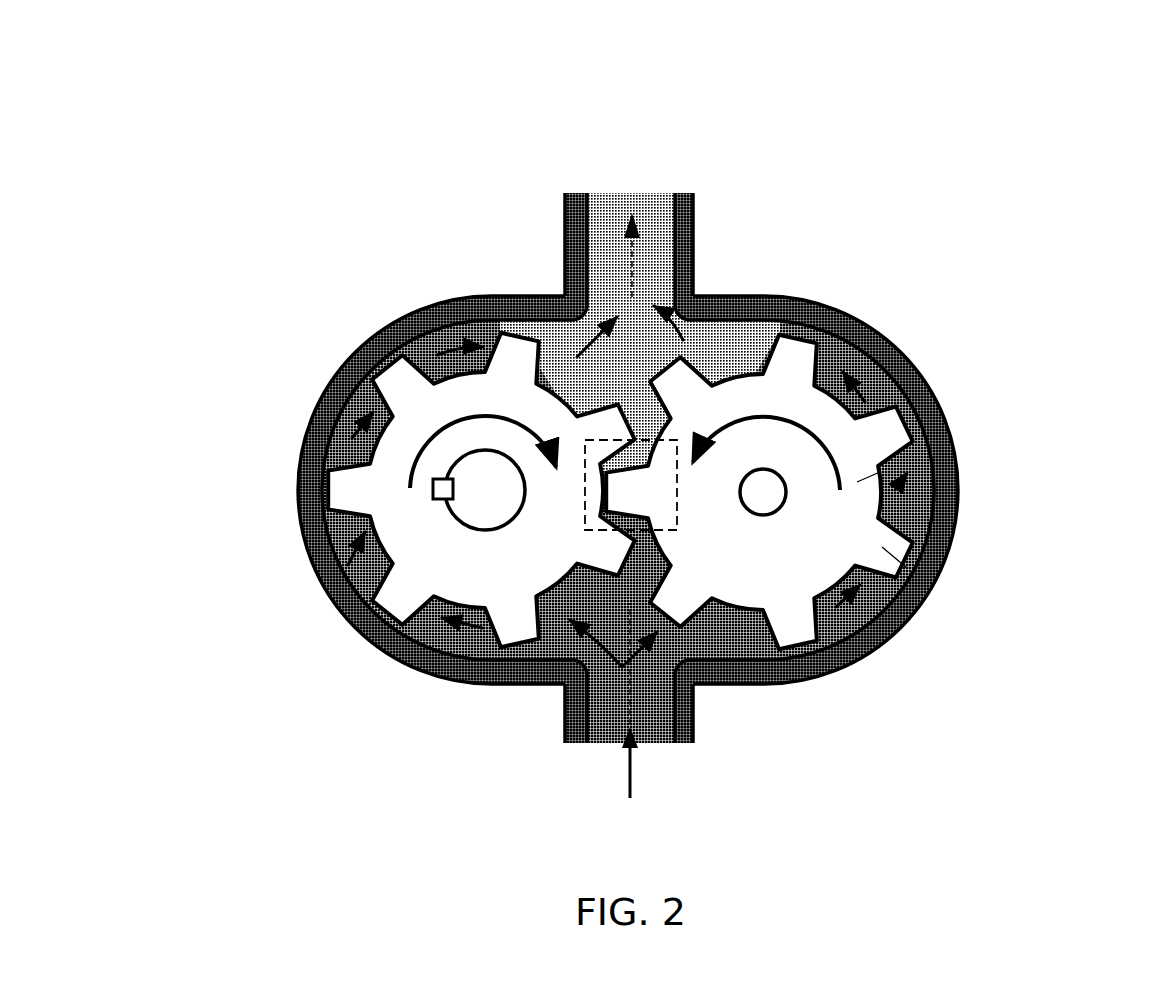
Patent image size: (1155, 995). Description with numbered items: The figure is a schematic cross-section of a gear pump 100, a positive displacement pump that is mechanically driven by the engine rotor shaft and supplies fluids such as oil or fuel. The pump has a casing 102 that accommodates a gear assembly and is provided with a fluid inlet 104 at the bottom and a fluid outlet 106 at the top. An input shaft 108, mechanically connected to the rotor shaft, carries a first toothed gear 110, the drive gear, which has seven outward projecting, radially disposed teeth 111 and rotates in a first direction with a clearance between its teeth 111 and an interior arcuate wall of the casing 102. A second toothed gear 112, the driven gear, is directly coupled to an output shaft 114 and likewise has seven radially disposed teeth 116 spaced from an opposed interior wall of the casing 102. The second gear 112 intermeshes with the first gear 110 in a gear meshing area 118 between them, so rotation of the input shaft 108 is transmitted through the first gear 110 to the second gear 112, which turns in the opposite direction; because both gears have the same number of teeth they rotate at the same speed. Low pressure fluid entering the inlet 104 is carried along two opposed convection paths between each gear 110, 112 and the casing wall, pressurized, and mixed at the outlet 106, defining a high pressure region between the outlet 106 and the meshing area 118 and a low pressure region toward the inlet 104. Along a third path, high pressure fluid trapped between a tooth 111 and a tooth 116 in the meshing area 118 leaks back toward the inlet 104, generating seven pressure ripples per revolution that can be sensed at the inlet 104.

The gear pump 100 is at (621, 426).
The casing 102 is at (913, 357).
The fluid inlet 104 is at (612, 725).
The fluid outlet 106 is at (650, 207).
The input shaft 108 is at (767, 492).
The first toothed gear 110 is at (957, 433).
The teeth 111 is at (912, 623).
The second toothed gear 112 is at (297, 460).
The output shaft 114 is at (480, 488).
The teeth 116 is at (323, 602).
The gear meshing area 118 is at (660, 430).